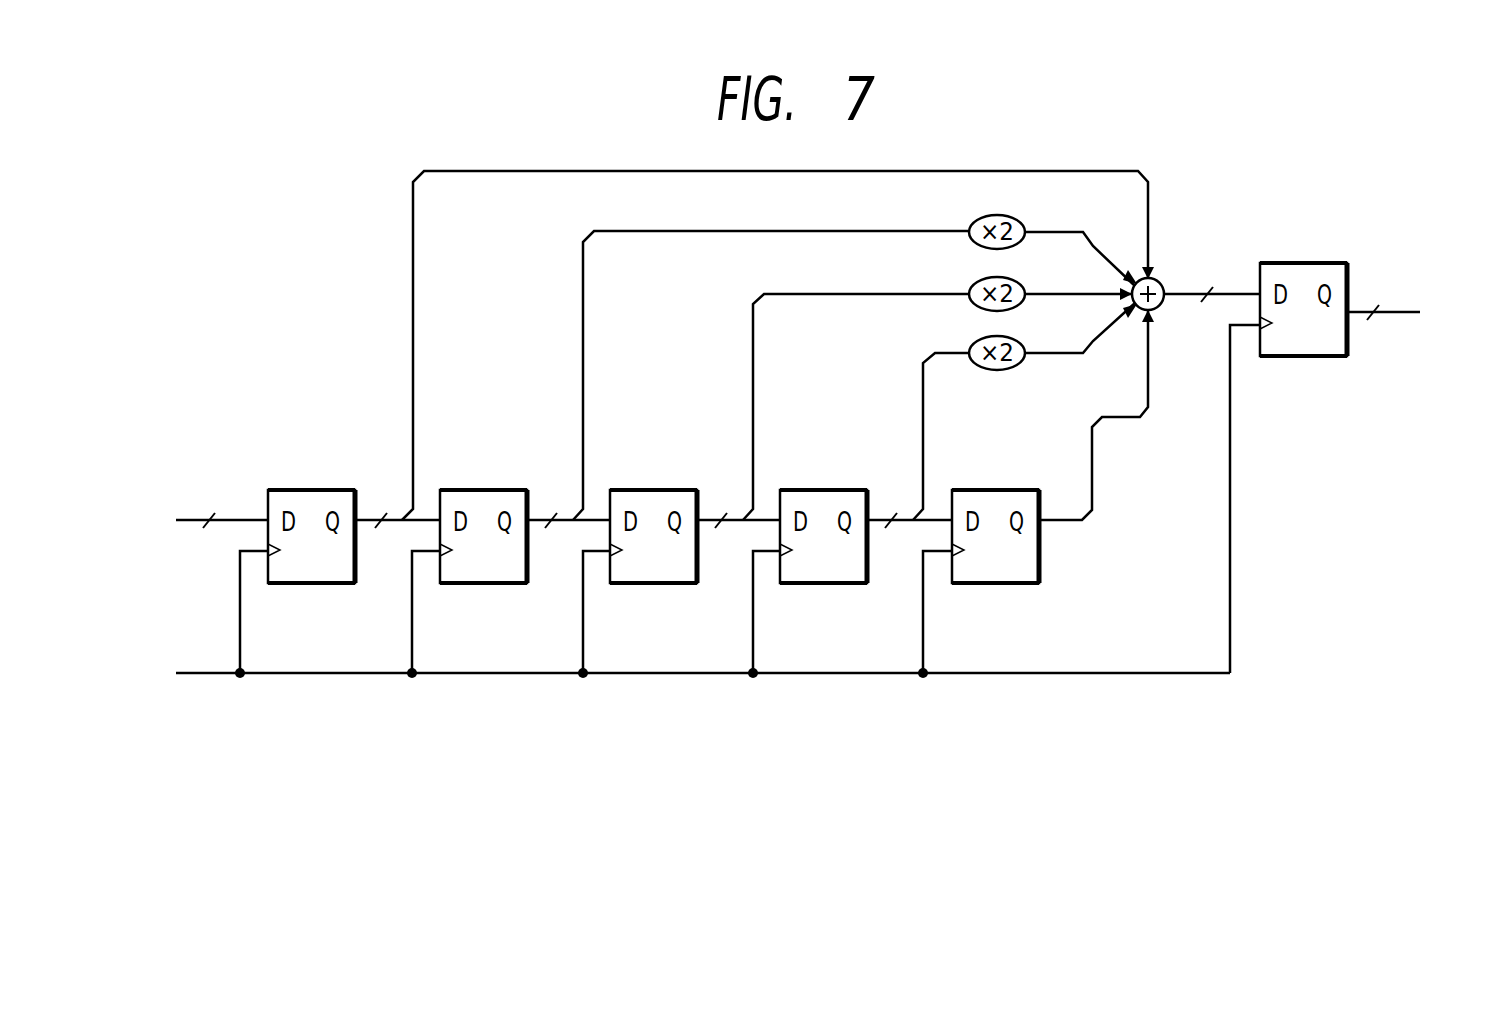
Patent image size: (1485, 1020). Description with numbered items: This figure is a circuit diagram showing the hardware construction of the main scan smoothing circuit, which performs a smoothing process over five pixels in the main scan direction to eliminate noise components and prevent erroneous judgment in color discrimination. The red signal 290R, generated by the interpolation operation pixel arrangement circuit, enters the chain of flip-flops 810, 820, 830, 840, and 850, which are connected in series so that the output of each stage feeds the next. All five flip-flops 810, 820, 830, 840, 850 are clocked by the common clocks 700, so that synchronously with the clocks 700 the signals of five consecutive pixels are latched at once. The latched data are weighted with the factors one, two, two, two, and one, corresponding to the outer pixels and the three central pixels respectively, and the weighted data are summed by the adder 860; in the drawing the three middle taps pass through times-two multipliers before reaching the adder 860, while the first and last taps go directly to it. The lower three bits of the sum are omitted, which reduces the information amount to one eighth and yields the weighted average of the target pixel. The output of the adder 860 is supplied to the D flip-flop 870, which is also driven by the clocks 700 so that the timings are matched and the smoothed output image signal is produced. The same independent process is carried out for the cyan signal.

The red signal 290R is at (183, 518).
The clocks 700 is at (214, 673).
The flip-flop 810 is at (352, 490).
The flip-flop 820 is at (523, 490).
The flip-flop 830 is at (693, 490).
The flip-flop 840 is at (863, 490).
The flip-flop 850 is at (1033, 490).
The adder 860 is at (1160, 283).
The D flip-flop 870 is at (1333, 263).